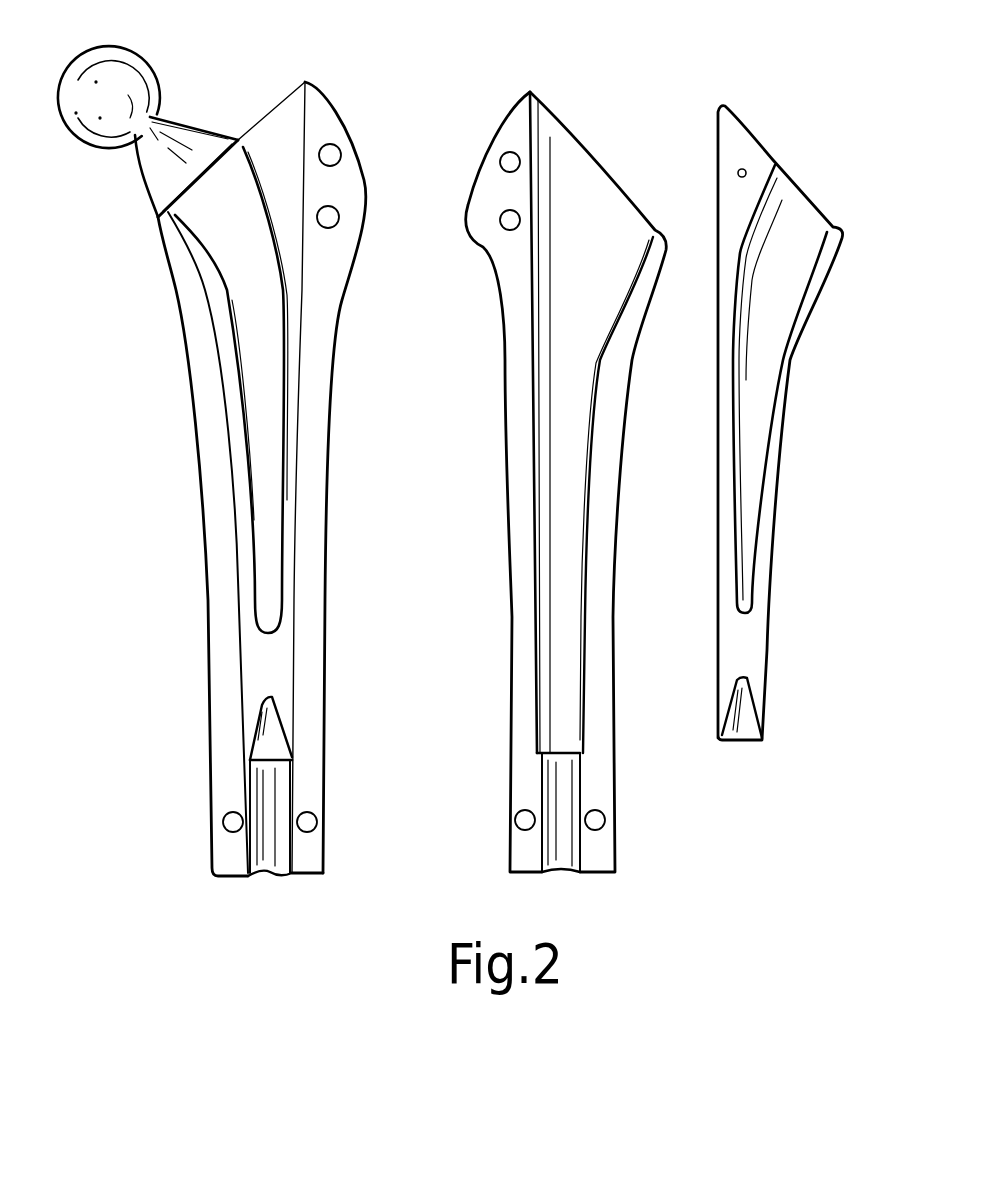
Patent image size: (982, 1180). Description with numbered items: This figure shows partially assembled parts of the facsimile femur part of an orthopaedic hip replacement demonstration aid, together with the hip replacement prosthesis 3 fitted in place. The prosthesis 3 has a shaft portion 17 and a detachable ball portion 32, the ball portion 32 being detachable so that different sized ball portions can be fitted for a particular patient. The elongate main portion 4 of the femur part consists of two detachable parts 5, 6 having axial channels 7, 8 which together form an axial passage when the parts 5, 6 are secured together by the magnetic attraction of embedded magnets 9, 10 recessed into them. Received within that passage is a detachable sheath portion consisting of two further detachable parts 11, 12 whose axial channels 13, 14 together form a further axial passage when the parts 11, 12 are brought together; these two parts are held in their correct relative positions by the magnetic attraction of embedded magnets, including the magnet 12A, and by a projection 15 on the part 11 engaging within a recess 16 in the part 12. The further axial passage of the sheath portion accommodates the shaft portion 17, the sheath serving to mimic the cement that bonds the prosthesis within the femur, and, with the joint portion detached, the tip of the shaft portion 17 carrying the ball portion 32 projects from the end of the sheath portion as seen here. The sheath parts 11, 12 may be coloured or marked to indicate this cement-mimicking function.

The ball portion 32 is at (143, 63).
The hip replacement prosthesis 3 is at (235, 172).
The elongate main portion 4 is at (335, 252).
The embedded magnet 9 is at (334, 213).
The shaft portion 17 is at (267, 352).
The axial channel 13 is at (287, 377).
The detachable part 5 is at (222, 577).
The detachable part 11 is at (270, 668).
The projection 15 is at (267, 735).
The axial channel 7 is at (270, 798).
The embedded magnet 10 is at (503, 218).
The axial channel 8 is at (558, 538).
The detachable part 6 is at (523, 678).
The embedded magnet 12A is at (738, 172).
The axial channel 14 is at (762, 322).
The detachable part 12 is at (747, 650).
The recess 16 is at (740, 712).